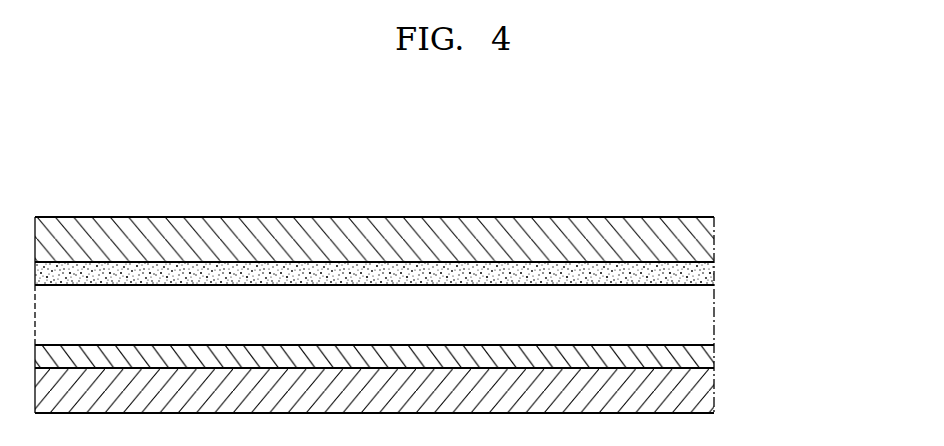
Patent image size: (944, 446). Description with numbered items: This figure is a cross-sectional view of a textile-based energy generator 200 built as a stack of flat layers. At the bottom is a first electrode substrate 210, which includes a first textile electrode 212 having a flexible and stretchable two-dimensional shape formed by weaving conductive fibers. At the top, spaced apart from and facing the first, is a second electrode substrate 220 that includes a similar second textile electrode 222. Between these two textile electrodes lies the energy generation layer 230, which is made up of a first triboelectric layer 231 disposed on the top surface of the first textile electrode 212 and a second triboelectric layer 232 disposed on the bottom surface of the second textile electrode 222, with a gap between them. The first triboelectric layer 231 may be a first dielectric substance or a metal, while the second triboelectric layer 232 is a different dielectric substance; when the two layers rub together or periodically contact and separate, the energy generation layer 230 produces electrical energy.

The textile-based energy generator 200 is at (655, 160).
The first electrode substrate 210 is at (434, 390).
The first textile electrode 212 is at (702, 397).
The second electrode substrate 220 is at (434, 239).
The second textile electrode 222 is at (697, 236).
The energy generation layer 230 is at (793, 262).
The first triboelectric layer 231 is at (699, 356).
The second triboelectric layer 232 is at (709, 270).